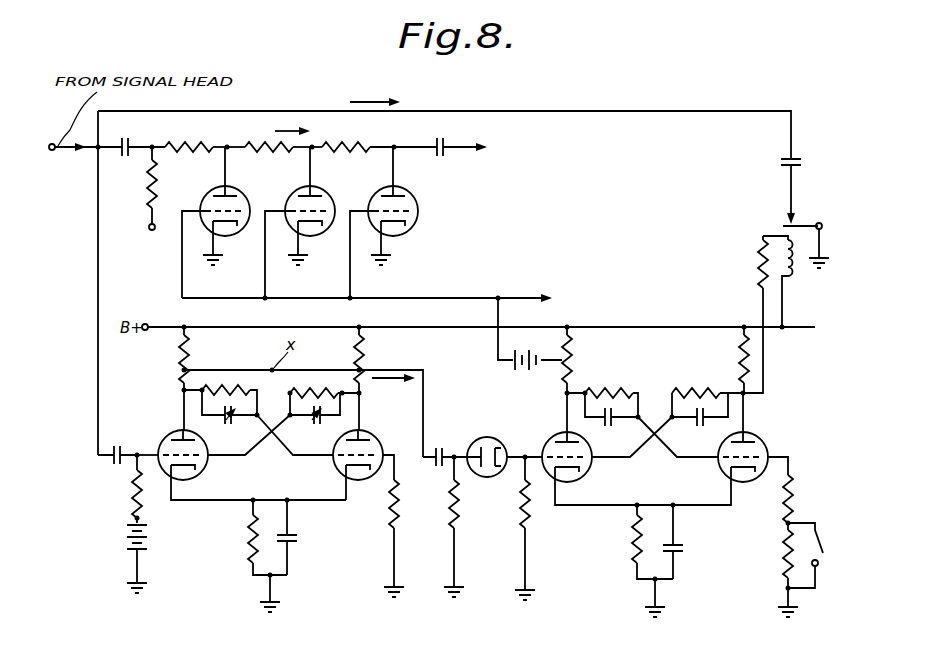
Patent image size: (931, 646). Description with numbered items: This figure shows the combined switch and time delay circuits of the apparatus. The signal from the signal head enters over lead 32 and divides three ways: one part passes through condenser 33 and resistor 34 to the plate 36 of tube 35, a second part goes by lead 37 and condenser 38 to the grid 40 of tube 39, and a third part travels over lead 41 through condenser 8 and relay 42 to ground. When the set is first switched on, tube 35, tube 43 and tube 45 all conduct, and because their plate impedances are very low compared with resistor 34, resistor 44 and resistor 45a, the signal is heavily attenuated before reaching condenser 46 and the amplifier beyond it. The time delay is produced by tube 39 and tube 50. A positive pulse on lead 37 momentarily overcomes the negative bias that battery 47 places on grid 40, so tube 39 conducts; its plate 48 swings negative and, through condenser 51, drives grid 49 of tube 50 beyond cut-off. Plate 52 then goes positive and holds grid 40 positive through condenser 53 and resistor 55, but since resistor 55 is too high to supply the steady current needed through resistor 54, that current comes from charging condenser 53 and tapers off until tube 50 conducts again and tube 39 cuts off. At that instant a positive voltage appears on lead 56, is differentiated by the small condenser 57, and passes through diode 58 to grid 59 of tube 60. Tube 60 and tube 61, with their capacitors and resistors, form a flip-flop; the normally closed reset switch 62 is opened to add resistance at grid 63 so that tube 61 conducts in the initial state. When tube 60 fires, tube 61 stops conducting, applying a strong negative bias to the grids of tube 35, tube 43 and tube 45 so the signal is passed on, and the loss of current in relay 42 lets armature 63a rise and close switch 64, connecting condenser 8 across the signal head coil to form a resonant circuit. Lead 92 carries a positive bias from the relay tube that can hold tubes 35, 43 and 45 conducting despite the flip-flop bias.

The condenser 8 is at (796, 158).
The lead 32 is at (76, 150).
The condenser 33 is at (126, 158).
The resistor 34 is at (204, 137).
The tube 35 is at (238, 192).
The plate 36 is at (209, 198).
The lead 37 is at (97, 278).
The condenser 38 is at (118, 442).
The tube 39 is at (164, 447).
The grid 40 is at (204, 449).
The lead 41 is at (492, 110).
The relay 42 is at (770, 230).
The tube 43 is at (328, 195).
The resistor 44 is at (268, 143).
The tube 45 is at (412, 200).
The resistor 45a is at (364, 144).
The condenser 46 is at (436, 138).
The battery 47 is at (130, 545).
The plate 48 is at (181, 434).
The grid 49 is at (384, 474).
The tube 50 is at (362, 426).
The condenser 51 is at (218, 406).
The plate 52 is at (376, 445).
The condenser 53 is at (270, 435).
The resistor 54 is at (132, 494).
The resistor 55 is at (312, 384).
The lead 56 is at (413, 370).
The condenser 57 is at (440, 444).
The diode 58 is at (490, 437).
The grid 59 is at (556, 450).
The tube 60 is at (585, 480).
The tube 61 is at (756, 458).
The reset switch 62 is at (824, 548).
The grid 63 is at (752, 443).
The armature 63a is at (826, 234).
The switch 64 is at (796, 220).
The lead 92 is at (510, 296).